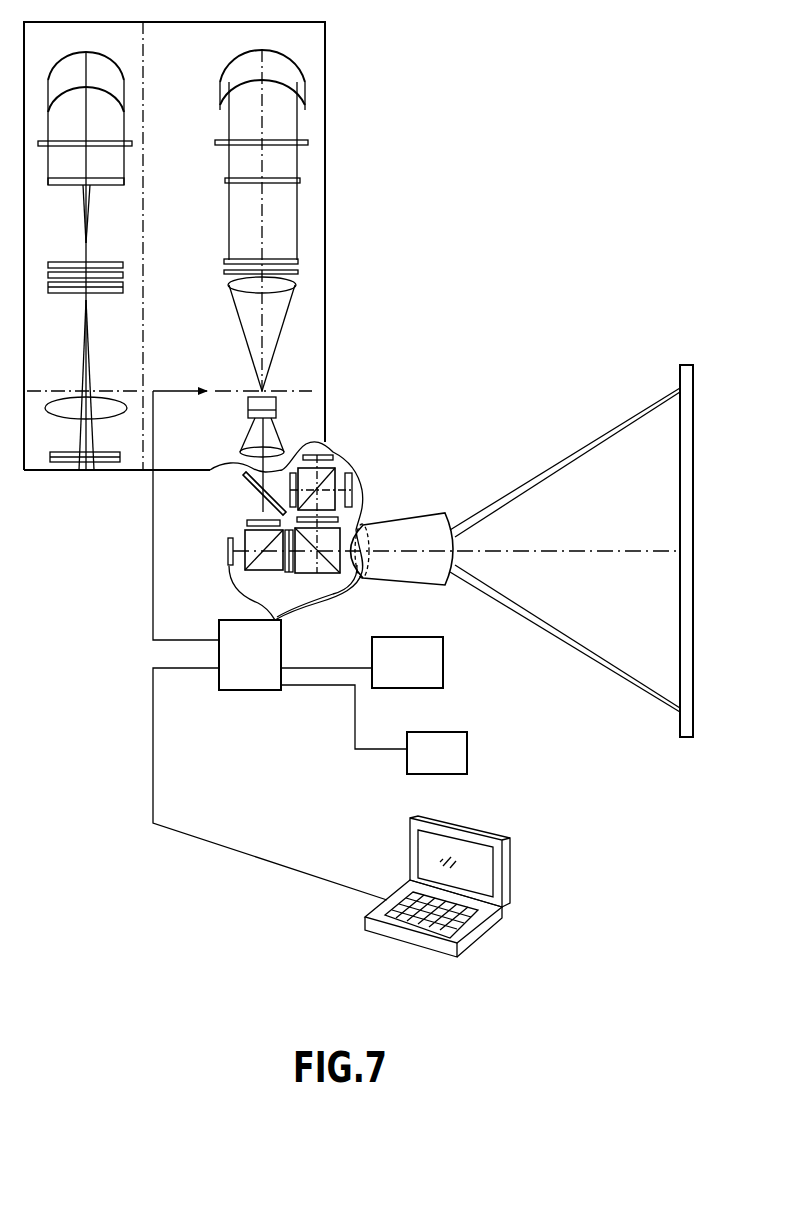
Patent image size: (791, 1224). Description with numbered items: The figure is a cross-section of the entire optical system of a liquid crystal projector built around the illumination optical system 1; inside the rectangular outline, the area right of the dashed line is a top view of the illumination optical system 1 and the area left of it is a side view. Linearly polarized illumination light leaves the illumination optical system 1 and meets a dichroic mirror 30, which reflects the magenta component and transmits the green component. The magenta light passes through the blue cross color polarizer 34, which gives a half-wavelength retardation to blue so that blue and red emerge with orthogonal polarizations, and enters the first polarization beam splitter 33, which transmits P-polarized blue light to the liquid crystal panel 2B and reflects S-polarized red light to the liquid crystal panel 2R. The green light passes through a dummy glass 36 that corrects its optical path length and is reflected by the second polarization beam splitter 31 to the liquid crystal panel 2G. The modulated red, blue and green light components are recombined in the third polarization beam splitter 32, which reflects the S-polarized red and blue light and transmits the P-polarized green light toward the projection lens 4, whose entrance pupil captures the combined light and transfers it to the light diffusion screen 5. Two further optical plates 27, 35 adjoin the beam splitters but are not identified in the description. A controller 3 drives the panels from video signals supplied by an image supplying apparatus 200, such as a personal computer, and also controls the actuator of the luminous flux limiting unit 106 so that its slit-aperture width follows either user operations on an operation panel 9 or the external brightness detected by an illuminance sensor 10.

The illumination optical system 1 is at (320, 60).
The luminous flux limiting unit 106 is at (295, 389).
The dichroic mirror 30 is at (243, 478).
The dummy glass 36 is at (248, 520).
The second polarization beam splitter 31 is at (245, 534).
The liquid crystal panel for green 2G is at (230, 556).
The polarizing plate 27 is at (290, 572).
The third polarization beam splitter 32 is at (320, 572).
The first polarization beam splitter 33 is at (333, 478).
The blue cross color polarizer 34 is at (299, 463).
The liquid crystal panel for red 2R is at (322, 453).
The liquid crystal panel for blue 2B is at (353, 486).
The polarizing plate 35 is at (338, 517).
The projection lens 4 is at (402, 527).
The light diffusion screen 5 is at (680, 373).
The controller 3 is at (250, 690).
The operation panel 9 is at (441, 664).
The illuminance sensor 10 is at (465, 750).
The image supplying apparatus 200 is at (509, 879).